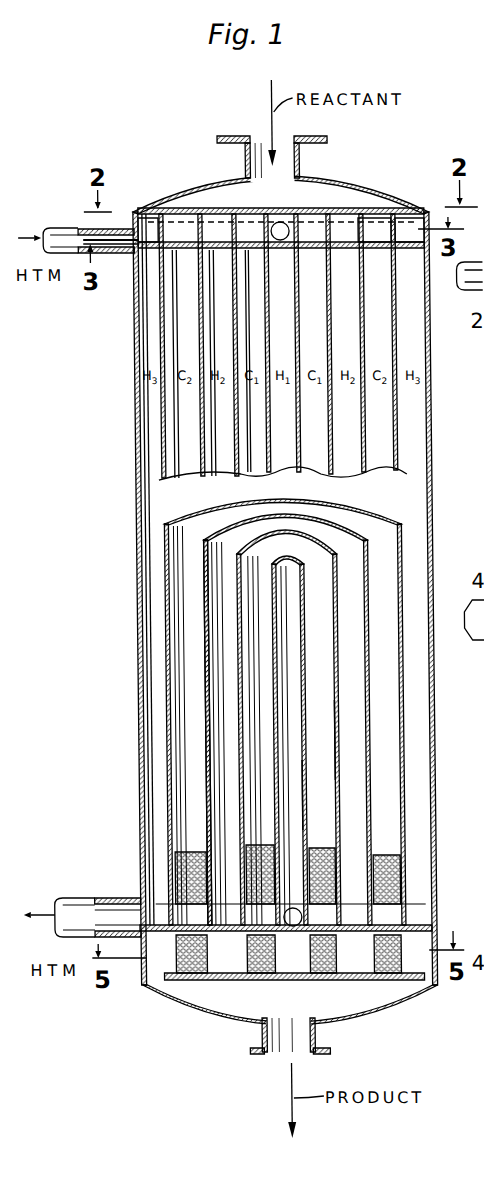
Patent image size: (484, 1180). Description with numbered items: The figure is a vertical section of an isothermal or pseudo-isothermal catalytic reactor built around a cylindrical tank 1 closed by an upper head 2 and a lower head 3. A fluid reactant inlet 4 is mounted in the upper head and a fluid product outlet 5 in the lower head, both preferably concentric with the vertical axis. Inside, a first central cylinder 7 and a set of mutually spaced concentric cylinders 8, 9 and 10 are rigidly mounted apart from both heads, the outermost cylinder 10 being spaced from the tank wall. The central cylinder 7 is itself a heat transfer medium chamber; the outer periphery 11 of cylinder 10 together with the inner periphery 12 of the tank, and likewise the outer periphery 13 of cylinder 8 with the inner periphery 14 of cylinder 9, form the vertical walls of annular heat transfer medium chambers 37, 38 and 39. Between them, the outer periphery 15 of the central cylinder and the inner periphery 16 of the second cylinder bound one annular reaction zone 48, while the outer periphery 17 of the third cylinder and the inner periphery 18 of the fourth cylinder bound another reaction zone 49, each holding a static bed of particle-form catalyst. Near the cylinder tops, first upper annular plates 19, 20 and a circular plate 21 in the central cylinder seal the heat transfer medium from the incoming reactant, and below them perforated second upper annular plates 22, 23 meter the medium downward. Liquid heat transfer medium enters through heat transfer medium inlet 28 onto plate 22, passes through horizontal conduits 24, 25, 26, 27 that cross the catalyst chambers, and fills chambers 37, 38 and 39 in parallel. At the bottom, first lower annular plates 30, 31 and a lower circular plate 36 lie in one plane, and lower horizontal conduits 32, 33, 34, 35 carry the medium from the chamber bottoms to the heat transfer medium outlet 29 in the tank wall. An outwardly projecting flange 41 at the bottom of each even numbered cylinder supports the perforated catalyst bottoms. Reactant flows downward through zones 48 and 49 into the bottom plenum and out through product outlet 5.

The cylindrical tank 1 is at (431, 432).
The upper head 2 is at (375, 185).
The lower head 3 is at (390, 1010).
The fluid reactant inlet 4 is at (251, 137).
The fluid product outlet 5 is at (254, 1055).
The first central cylinder 7 is at (287, 454).
The second cylinder 8 is at (320, 452).
The third cylinder 9 is at (352, 341).
The fourth cylinder 10 is at (383, 315).
The outer periphery of cylinder 10 11 is at (398, 394).
The inner periphery of the cylindrical tank 12 is at (418, 516).
The outer periphery of cylinder 8 13 is at (232, 548).
The inner periphery of cylinder 9 14 is at (358, 552).
The outer periphery of the first central cylinder 15 is at (300, 793).
The inner periphery of the second cylinder 16 is at (322, 736).
The outer periphery of the third cylinder 17 is at (368, 591).
The inner periphery of the fourth cylinder 18 is at (394, 562).
The first upper annular plate 19 is at (215, 213).
The first upper annular plate 20 is at (427, 212).
The circular plate 21 is at (278, 214).
The second upper annular plate 22 is at (147, 253).
The second upper annular plate 23 is at (338, 250).
The conduit 24 is at (185, 210).
The conduit 25 is at (242, 226).
The heat transfer medium conduit 26 is at (309, 215).
The heat transfer medium conduit 27 is at (388, 212).
The heat transfer medium inlet 28 is at (73, 228).
The heat transfer medium outlet 29 is at (92, 938).
The first lower annular plate 30 is at (169, 920).
The first lower annular plate 31 is at (226, 935).
The horizontal conduit 32 is at (173, 888).
The horizontal conduit 33 is at (258, 864).
The horizontal conduit 34 is at (318, 862).
The horizontal conduit 35 is at (397, 913).
The lower circular plate 36 is at (284, 935).
The heat transfer medium chamber 37 is at (160, 714).
The heat transfer medium chamber 38 is at (214, 715).
The heat transfer medium chamber 39 is at (290, 669).
The outwardly projecting flange 41 is at (329, 970).
The annular reaction zone 48 is at (188, 626).
The annular reaction zone 49 is at (318, 609).